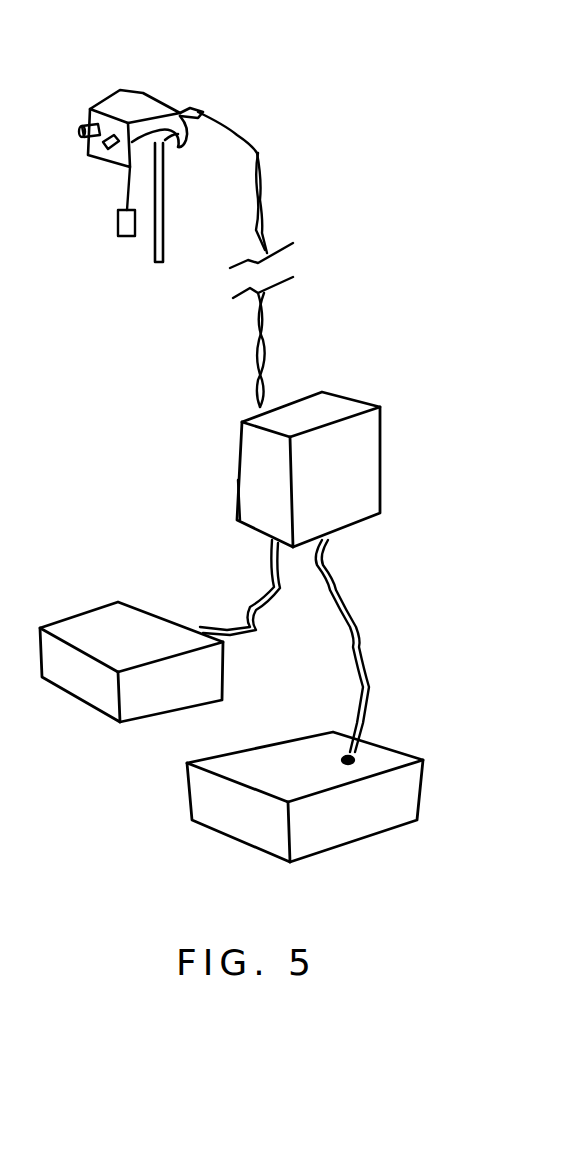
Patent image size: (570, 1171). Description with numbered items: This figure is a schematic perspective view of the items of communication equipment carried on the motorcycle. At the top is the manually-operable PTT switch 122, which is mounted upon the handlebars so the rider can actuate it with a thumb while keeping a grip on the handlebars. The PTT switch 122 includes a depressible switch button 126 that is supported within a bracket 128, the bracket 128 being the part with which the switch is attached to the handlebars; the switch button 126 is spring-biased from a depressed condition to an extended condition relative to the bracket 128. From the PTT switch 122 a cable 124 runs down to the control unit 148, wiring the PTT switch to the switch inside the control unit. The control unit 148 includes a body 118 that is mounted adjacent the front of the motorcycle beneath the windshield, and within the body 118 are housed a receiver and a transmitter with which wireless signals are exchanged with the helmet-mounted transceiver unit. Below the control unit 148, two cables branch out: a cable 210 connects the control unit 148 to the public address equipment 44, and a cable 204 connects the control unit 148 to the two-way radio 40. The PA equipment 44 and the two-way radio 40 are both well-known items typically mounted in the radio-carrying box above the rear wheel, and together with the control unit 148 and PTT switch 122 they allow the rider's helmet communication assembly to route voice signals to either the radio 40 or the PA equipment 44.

The PTT switch 122 is at (87, 128).
The cable 124 is at (260, 155).
The switch button 126 is at (80, 133).
The bracket 128 is at (113, 160).
The control unit 148 is at (263, 462).
The body 118 is at (263, 500).
The PA equipment 44 is at (82, 630).
The cable 210 is at (258, 627).
The cable 204 is at (363, 657).
The two-way radio 40 is at (248, 823).